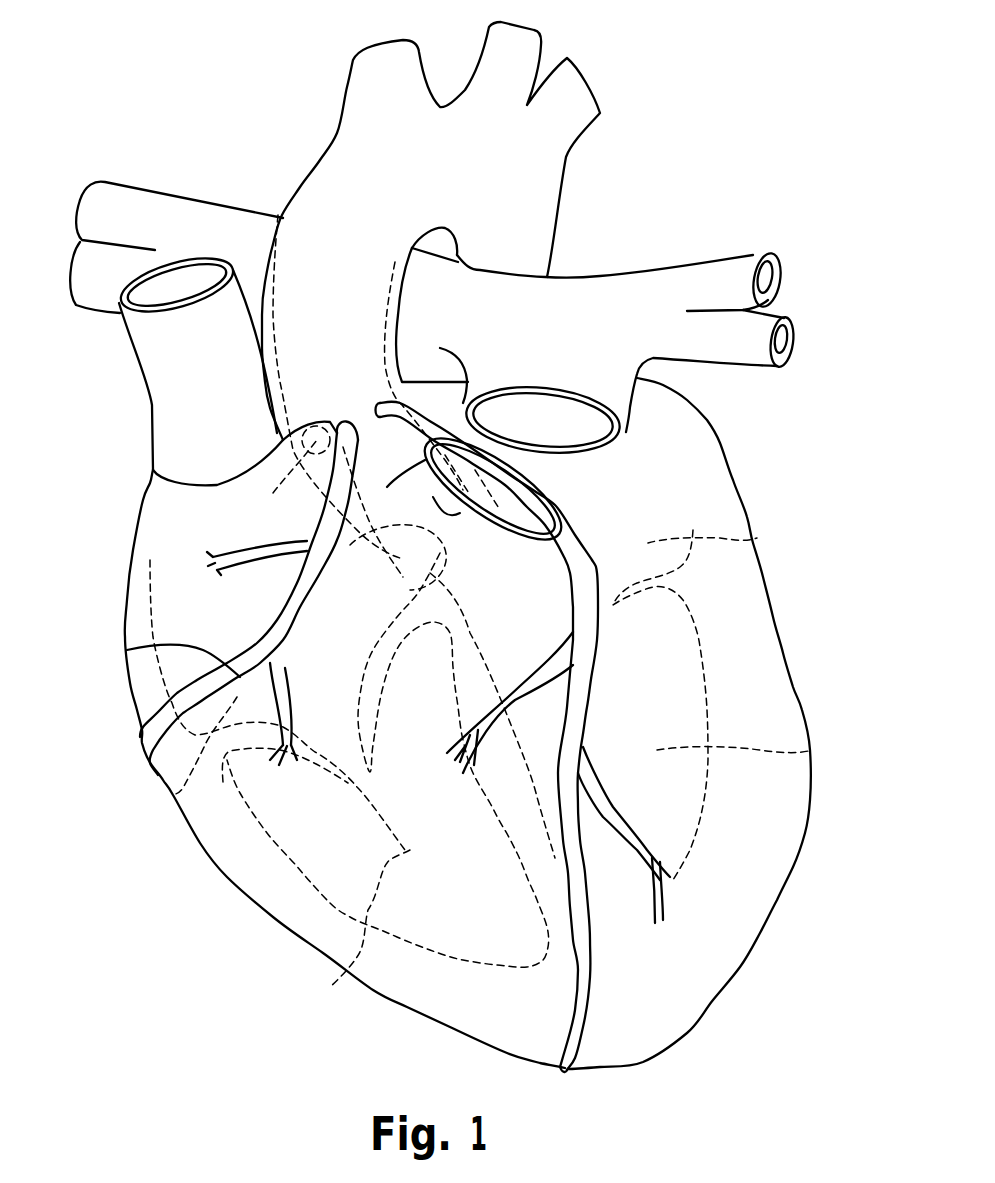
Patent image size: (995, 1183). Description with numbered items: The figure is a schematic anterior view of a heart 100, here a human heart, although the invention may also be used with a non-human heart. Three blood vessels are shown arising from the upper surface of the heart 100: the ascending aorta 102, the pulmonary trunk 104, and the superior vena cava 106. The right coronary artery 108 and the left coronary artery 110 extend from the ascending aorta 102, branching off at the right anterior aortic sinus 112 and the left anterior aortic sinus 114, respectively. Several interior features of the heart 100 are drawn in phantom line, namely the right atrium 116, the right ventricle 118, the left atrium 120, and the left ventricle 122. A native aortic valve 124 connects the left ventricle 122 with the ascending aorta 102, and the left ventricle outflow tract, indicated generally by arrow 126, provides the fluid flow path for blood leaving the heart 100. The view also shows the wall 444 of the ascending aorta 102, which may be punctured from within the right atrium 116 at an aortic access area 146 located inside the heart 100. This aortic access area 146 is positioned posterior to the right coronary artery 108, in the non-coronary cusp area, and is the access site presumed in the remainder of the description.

The heart 100 is at (228, 99).
The ascending aorta 102 is at (461, 169).
The pulmonary trunk 104 is at (561, 345).
The superior vena cava 106 is at (211, 365).
The right coronary artery 108 is at (127, 650).
The left coronary artery 110 is at (596, 542).
The right anterior aortic sinus 112 is at (305, 390).
The left anterior aortic sinus 114 is at (363, 367).
The right atrium 116 is at (175, 794).
The right ventricle 118 is at (342, 972).
The left atrium 120 is at (757, 538).
The left ventricle 122 is at (812, 750).
The native aortic valve 124 is at (390, 535).
The left ventricle outflow tract 126 is at (473, 542).
The aortic access area 146 is at (320, 432).
The wall 444 is at (273, 493).